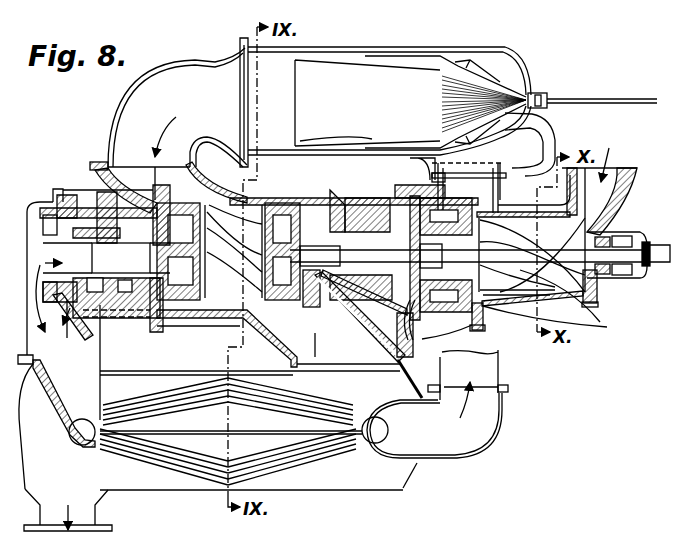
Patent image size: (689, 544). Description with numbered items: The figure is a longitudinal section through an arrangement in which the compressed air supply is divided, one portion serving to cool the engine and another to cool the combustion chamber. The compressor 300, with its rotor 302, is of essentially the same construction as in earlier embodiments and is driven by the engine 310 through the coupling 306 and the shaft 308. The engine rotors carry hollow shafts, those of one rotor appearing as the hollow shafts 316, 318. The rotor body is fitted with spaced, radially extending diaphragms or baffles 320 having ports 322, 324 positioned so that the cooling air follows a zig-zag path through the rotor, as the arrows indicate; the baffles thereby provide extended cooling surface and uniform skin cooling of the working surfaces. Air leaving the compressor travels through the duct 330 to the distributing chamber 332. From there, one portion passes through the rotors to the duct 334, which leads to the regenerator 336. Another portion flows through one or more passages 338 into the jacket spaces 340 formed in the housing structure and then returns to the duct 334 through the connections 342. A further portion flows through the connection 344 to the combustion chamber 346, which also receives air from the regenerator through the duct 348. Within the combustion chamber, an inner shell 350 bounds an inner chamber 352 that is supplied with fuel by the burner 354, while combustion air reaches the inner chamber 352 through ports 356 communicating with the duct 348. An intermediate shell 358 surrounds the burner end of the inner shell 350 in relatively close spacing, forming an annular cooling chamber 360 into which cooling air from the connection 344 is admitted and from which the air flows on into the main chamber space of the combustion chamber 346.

The compressor 300 is at (576, 251).
The rotor 302 is at (539, 245).
The coupling 306 is at (420, 355).
The shaft 308 is at (303, 303).
The engine 310 is at (246, 148).
The hollow shaft 316 is at (337, 378).
The hollow shaft 318 is at (105, 251).
The diaphragms or baffles 320 is at (405, 192).
The port 322 is at (368, 200).
The port 324 is at (283, 192).
The duct 330 is at (418, 308).
The distributing chamber 332 is at (427, 207).
The duct 334 is at (66, 376).
The regenerator 336 is at (143, 379).
The passage 338 is at (390, 318).
The jacket space 340 is at (223, 318).
The connection 342 is at (119, 318).
The connection 344 is at (549, 133).
The combustion chamber 346 is at (484, 47).
The duct 348 is at (492, 188).
The inner shell 350 is at (353, 60).
The inner chamber 352 is at (367, 103).
The burner 354 is at (537, 100).
The port 356 is at (478, 72).
The intermediate shell 358 is at (387, 145).
The annular cooling chamber 360 is at (370, 138).